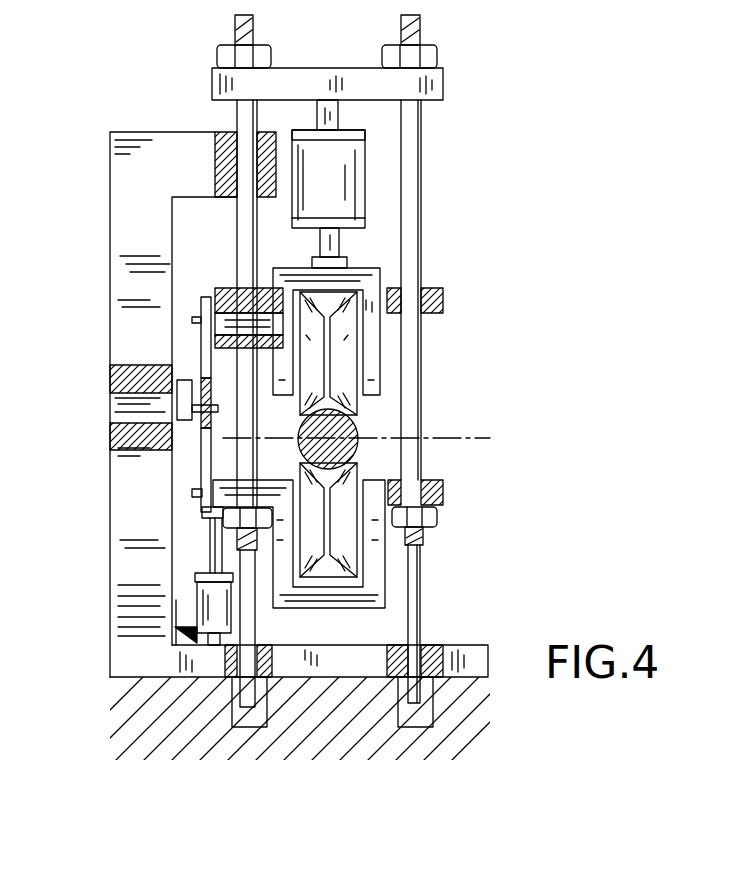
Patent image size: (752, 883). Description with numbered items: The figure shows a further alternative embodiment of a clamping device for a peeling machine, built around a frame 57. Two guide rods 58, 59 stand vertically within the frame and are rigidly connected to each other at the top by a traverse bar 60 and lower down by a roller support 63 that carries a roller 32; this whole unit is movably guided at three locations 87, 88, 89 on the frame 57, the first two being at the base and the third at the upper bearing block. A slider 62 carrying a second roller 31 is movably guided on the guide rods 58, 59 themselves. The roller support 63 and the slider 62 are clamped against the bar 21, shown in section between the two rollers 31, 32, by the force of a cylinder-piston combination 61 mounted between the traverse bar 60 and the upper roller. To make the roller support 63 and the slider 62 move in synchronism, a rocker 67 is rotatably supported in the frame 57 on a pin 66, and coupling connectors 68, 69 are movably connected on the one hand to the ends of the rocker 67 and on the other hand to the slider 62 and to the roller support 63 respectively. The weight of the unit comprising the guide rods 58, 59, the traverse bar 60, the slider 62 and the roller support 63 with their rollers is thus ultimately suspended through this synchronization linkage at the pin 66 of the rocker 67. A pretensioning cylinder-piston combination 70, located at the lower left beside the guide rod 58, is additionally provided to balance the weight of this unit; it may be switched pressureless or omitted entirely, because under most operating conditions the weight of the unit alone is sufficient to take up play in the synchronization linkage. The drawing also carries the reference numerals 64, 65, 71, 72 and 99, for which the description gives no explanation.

The bar 21 is at (343, 427).
The roller 31 is at (345, 380).
The roller 32 is at (345, 553).
The frame 57 is at (160, 236).
The guide rod 58 is at (238, 120).
The guide rod 59 is at (412, 125).
The traverse bar 60 is at (443, 80).
The cylinder-piston combination 61 is at (345, 185).
The slider 62 is at (443, 295).
The roller support 63 is at (445, 483).
The nut block 64 is at (230, 320).
The bracket bar 65 is at (196, 318).
The pin 66 is at (130, 407).
The rocker 67 is at (172, 450).
The coupling connector 68 is at (203, 348).
The coupling connector 69 is at (207, 460).
The pretensioning cylinder-piston combination 70 is at (195, 600).
The base plate 71 is at (247, 620).
The lower guide rod 72 is at (420, 612).
The guide location 87 is at (225, 665).
The guide location 88 is at (425, 658).
The guide location 89 is at (217, 163).
The axis 99 is at (486, 443).